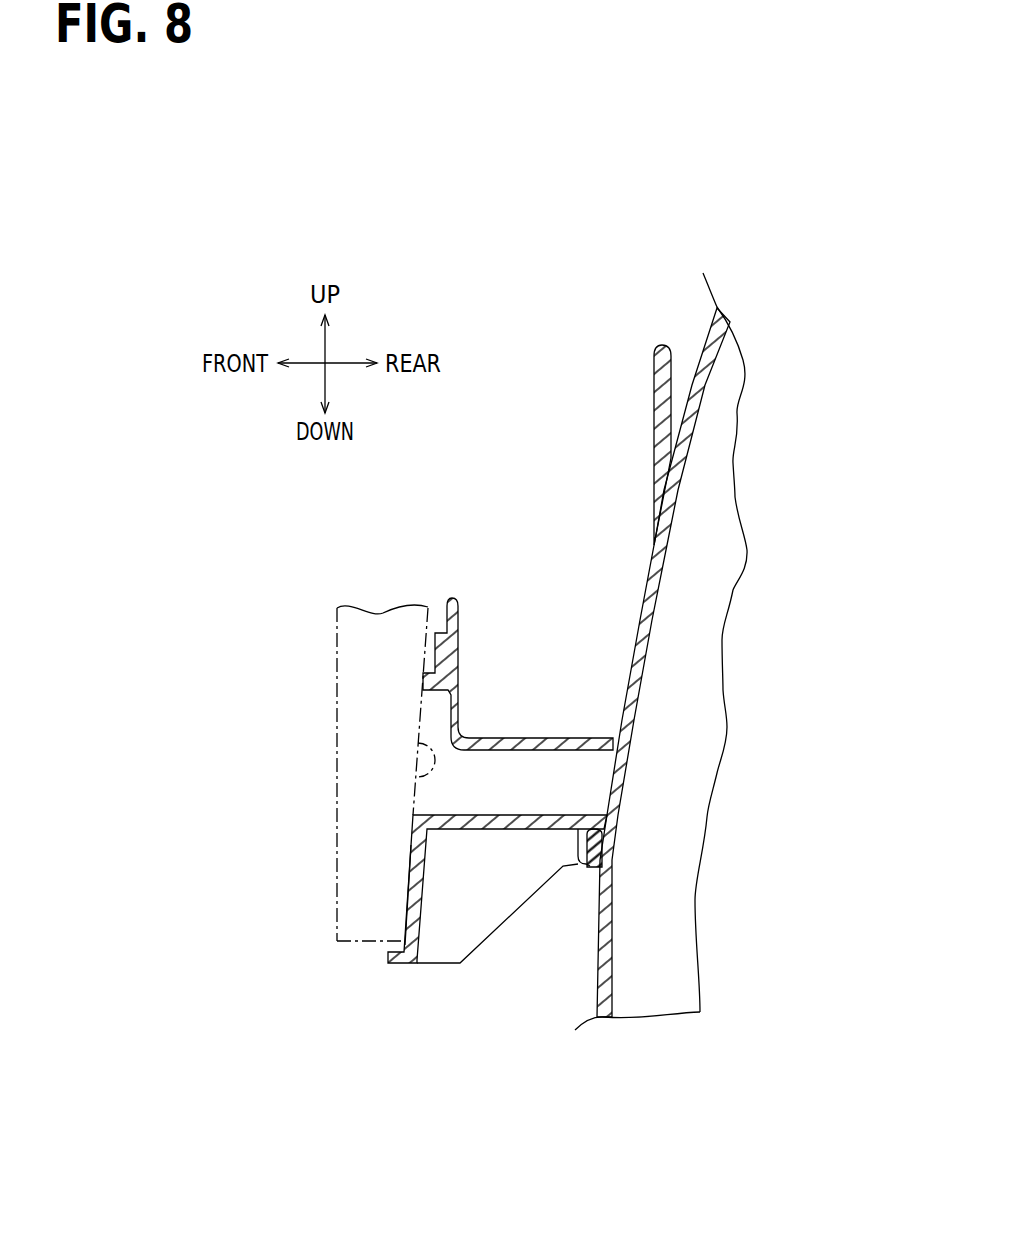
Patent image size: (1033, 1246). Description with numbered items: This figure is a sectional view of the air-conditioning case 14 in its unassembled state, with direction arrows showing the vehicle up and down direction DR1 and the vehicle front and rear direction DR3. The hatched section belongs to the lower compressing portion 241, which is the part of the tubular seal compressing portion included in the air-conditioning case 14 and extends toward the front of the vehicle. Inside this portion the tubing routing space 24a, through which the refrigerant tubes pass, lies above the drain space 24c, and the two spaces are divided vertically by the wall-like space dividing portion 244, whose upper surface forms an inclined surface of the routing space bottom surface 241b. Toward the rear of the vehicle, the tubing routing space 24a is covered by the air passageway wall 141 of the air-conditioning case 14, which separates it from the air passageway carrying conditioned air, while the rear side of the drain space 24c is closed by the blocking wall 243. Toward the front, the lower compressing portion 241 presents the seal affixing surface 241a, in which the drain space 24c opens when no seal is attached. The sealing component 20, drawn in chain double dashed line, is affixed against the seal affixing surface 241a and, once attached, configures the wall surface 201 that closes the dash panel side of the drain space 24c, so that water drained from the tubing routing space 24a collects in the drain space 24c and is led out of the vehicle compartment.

The air-conditioning case 14 is at (706, 324).
The air passageway wall 141 is at (650, 605).
The sealing component 20 is at (373, 688).
The wall surface 201 is at (410, 780).
The tubing routing space 24a is at (568, 628).
The drain space 24c is at (522, 787).
The lower compressing portion 241 is at (402, 963).
The seal affixing surface 241a is at (405, 900).
The routing space bottom surface 241b is at (558, 738).
The blocking wall 243 is at (610, 788).
The space dividing portion 244 is at (537, 743).
The vehicle up and down direction DR1 is at (327, 340).
The vehicle front and rear direction DR3 is at (340, 360).